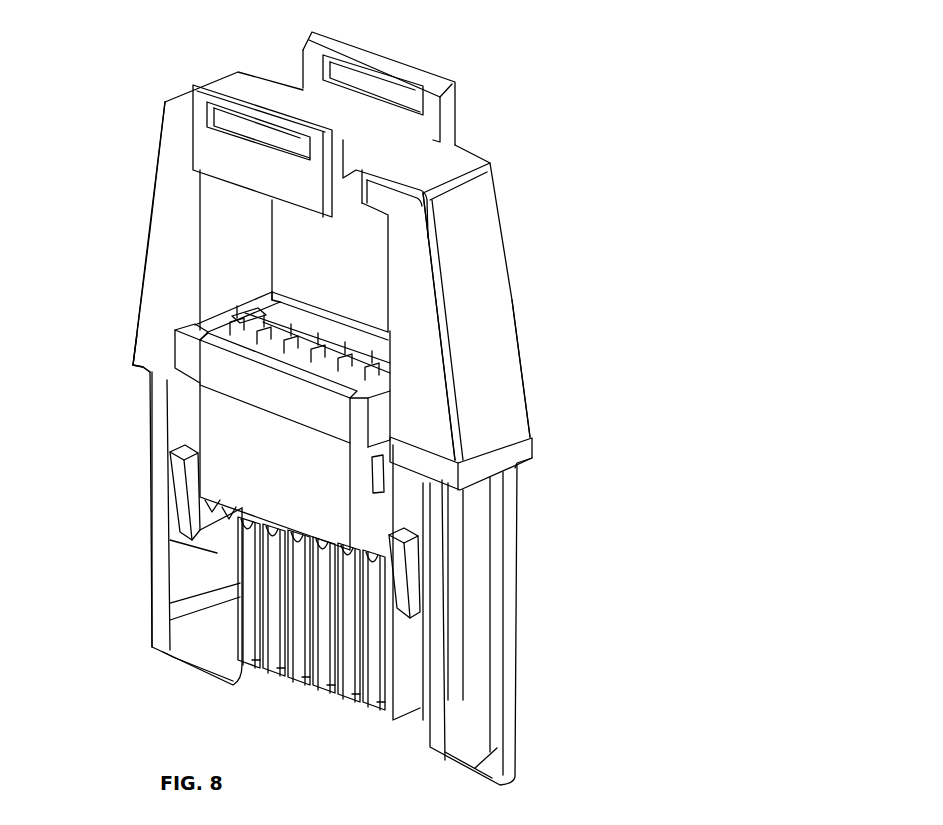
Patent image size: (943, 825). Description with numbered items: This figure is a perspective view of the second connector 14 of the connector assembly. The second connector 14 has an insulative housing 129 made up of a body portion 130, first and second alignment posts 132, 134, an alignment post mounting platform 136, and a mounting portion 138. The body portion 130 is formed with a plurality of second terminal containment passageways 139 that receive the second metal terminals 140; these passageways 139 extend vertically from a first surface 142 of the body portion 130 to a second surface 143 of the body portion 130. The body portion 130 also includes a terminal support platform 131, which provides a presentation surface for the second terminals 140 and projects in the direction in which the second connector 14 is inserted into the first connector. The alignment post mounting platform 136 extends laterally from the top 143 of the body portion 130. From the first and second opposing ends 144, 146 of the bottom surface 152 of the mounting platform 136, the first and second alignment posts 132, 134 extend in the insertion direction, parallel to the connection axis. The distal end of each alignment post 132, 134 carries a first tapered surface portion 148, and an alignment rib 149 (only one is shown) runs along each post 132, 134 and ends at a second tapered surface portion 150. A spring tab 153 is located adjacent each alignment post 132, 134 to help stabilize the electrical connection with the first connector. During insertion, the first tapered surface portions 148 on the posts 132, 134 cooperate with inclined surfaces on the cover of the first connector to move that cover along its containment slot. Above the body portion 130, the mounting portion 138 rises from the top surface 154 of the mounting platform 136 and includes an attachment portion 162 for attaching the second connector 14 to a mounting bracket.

The second connector 14 is at (540, 165).
The attachment portion 162 is at (458, 97).
The mounting portion 138 is at (148, 232).
The second end 146 is at (135, 335).
The bottom surface 152 is at (140, 375).
The body portion 130 is at (218, 435).
The insulative housing 129 is at (240, 463).
The second terminal containment passageways 139 is at (292, 303).
The second surface 143 is at (337, 307).
The spring tab 153 is at (185, 502).
The first surface 142 is at (227, 512).
The second alignment post 134 is at (153, 602).
The second metal terminals 140 is at (240, 610).
The top surface 154 is at (513, 440).
The alignment post mounting platform 136 is at (533, 448).
The first end 144 is at (515, 460).
The first alignment post 132 is at (510, 572).
The alignment rib 149 is at (497, 640).
The terminal support platform 131 is at (410, 670).
The first tapered surface portion 148 is at (457, 760).
The second tapered surface portion 150 is at (493, 753).